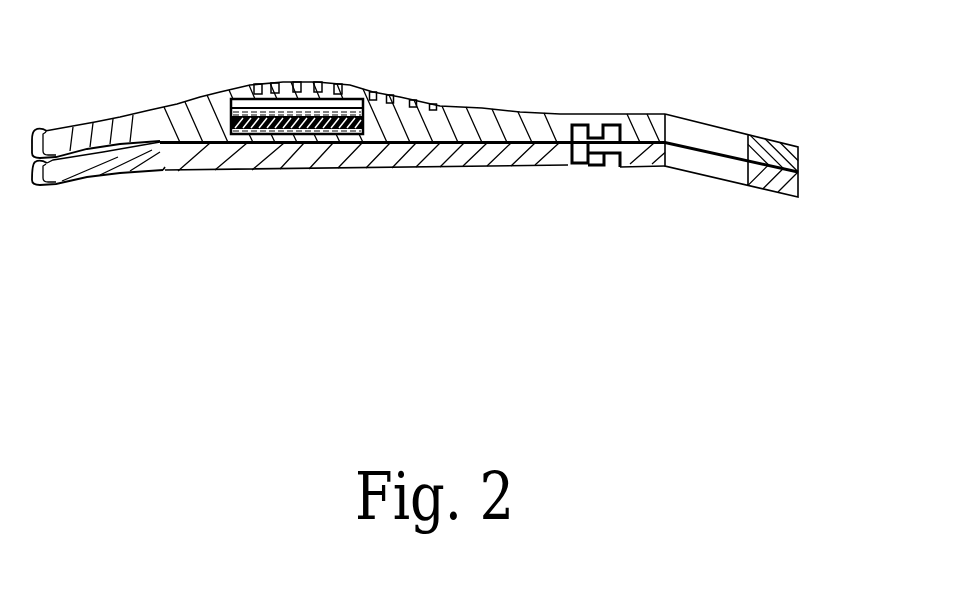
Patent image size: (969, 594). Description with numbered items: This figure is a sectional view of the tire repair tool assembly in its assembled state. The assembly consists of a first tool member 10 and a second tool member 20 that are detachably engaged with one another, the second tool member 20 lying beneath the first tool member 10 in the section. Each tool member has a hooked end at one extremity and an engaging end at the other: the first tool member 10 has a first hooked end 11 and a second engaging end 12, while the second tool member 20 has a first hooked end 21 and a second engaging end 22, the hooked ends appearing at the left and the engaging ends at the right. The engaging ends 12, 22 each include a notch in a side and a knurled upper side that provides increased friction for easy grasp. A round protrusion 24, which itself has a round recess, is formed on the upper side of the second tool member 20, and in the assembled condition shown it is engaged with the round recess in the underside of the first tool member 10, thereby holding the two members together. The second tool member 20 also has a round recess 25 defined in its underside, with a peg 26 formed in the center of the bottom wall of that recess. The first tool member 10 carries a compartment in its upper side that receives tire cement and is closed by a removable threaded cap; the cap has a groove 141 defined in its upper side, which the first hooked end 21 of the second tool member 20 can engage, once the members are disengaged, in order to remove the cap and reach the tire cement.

The first tool member 10 is at (477, 118).
The first hooked end 11 is at (127, 138).
The second engaging end 12 is at (770, 151).
The groove 141 is at (298, 84).
The second tool member 20 is at (354, 157).
The first hooked end 21 is at (100, 172).
The second engaging end 22 is at (788, 177).
The round protrusion 24 is at (579, 138).
The round recess 25 is at (578, 158).
The peg 26 is at (597, 158).